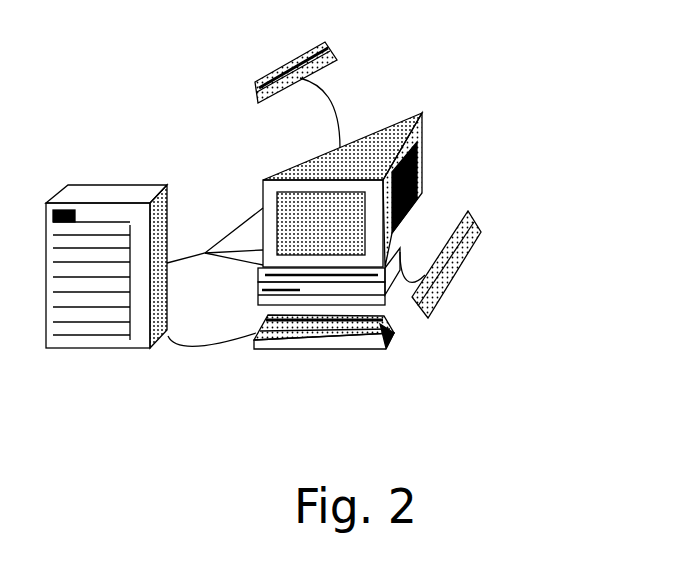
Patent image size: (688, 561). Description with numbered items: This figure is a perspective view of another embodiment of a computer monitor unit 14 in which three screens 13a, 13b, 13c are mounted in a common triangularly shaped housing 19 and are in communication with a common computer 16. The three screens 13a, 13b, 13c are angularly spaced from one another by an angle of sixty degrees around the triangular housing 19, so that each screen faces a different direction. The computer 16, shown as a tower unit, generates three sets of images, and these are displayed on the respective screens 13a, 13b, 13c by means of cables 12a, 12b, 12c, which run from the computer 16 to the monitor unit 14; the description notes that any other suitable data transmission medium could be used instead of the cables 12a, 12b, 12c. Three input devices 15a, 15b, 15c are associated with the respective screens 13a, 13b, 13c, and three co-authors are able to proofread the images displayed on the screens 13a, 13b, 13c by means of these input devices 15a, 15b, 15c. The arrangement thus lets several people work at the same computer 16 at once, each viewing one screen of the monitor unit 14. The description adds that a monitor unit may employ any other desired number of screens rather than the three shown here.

The cable 12a is at (235, 247).
The cable 12b is at (233, 262).
The cable 12c is at (238, 228).
The screen 13a is at (293, 203).
The screen 13b is at (400, 215).
The screen 13c is at (328, 156).
The monitor unit 14 is at (535, 204).
The input device 15a is at (320, 350).
The input device 15b is at (452, 273).
The input device 15c is at (290, 67).
The computer 16 is at (112, 348).
The triangular housing 19 is at (358, 152).